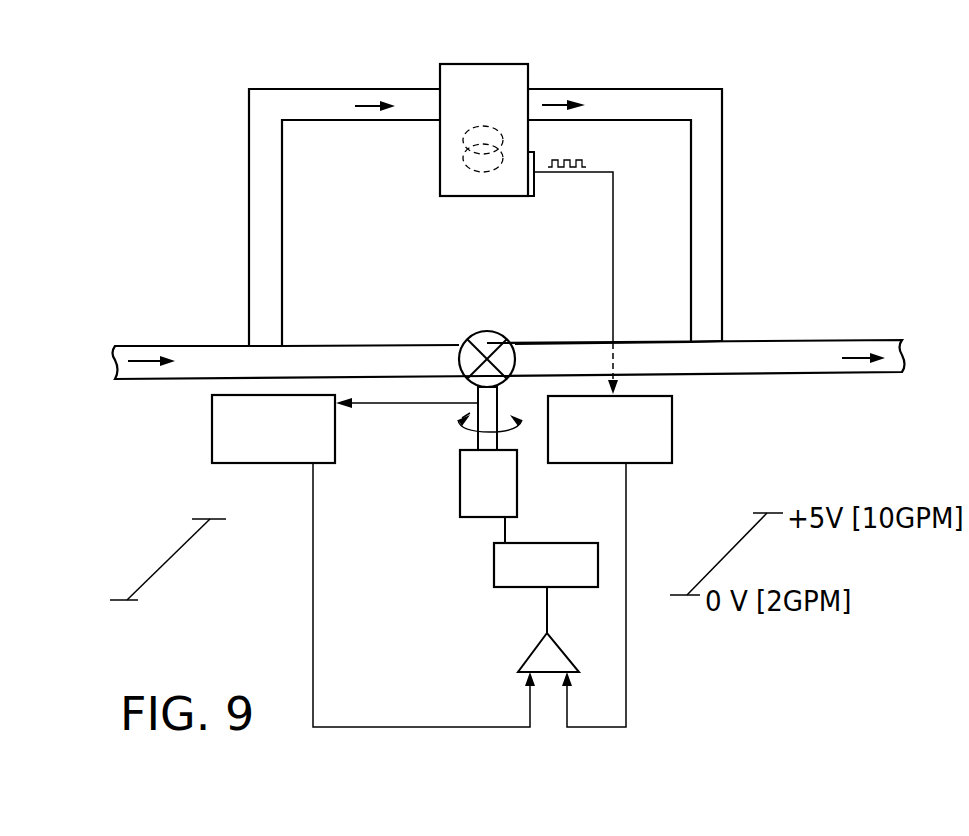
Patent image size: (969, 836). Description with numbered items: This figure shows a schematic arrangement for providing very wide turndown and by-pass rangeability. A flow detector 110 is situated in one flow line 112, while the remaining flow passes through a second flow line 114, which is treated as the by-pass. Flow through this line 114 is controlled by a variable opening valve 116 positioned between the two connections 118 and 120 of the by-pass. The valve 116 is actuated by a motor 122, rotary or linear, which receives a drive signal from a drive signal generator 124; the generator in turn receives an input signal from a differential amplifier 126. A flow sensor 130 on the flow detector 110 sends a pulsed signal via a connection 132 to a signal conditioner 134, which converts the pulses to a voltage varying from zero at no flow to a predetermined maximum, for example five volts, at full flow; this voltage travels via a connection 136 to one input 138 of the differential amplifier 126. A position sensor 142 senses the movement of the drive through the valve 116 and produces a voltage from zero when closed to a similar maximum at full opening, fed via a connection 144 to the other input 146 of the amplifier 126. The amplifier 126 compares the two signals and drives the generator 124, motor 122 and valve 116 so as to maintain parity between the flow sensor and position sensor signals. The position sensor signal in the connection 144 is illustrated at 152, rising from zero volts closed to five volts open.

The flow detector 110 is at (478, 62).
The flow line 112 is at (248, 114).
The flow line (by-pass) 114 is at (372, 350).
The variable opening valve 116 is at (482, 332).
The connection 118 is at (262, 350).
The connection 120 is at (706, 346).
The motor 122 is at (460, 492).
The drive signal generator 124 is at (556, 545).
The differential amplifier 126 is at (566, 660).
The flow sensor 130 is at (540, 180).
The connection 132 is at (618, 302).
The signal conditioner 134 is at (672, 424).
The connection 136 is at (627, 542).
The input 138 is at (578, 676).
The position sensor 142 is at (212, 424).
The connection 144 is at (315, 638).
The input 146 is at (522, 676).
The signal 152 is at (142, 565).